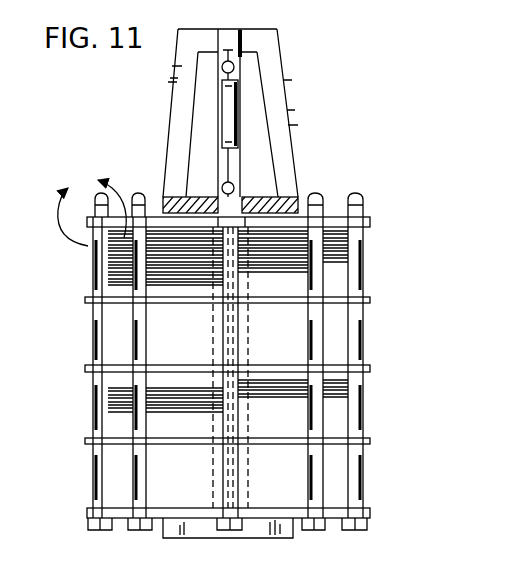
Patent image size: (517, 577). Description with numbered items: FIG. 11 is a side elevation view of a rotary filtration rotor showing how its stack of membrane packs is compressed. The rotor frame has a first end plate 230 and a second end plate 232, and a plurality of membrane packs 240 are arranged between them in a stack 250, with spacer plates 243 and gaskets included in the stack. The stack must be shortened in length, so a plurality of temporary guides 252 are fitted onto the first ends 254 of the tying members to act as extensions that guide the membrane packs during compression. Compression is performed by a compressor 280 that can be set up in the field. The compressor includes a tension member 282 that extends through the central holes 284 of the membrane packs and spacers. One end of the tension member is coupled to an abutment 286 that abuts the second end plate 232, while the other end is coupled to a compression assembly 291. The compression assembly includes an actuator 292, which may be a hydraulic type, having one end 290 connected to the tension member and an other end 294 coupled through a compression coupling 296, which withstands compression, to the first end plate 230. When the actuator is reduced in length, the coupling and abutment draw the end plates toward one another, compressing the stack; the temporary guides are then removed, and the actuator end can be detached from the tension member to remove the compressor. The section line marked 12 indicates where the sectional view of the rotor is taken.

The section line 12 is at (93, 201).
The first end plate 230 is at (85, 224).
The second end plate 232 is at (86, 514).
The membrane packs 240 is at (342, 394).
The spacer plates 243 is at (366, 366).
The stack 250 is at (352, 385).
The temporary guides 252 is at (90, 212).
The first ends 254 is at (93, 260).
The compressor 280 is at (330, 153).
The tension member 282 is at (262, 186).
The central holes 284 is at (243, 326).
The abutment 286 is at (280, 538).
The actuator end 290 is at (240, 172).
The compression assembly 291 is at (172, 80).
The actuator 292 is at (246, 110).
The actuator end 294 is at (234, 70).
The compression coupling 296 is at (296, 128).